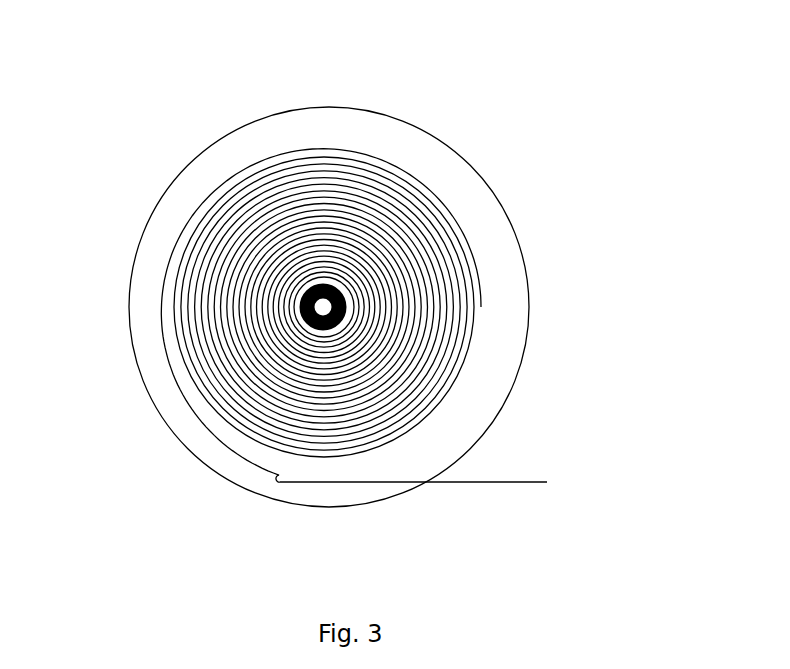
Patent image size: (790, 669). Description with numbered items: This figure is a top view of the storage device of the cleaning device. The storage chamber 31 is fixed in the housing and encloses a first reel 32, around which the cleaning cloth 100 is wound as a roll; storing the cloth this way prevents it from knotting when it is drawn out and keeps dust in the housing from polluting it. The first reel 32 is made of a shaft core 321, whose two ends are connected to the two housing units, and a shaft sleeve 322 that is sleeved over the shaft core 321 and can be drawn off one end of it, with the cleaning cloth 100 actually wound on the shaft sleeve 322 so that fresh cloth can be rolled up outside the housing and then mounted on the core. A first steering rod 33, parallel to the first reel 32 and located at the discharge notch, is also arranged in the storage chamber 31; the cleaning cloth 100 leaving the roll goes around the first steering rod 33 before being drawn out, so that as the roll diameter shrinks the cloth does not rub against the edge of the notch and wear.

The storage chamber 31 is at (453, 153).
The first reel 32 is at (398, 55).
The shaft core 321 is at (340, 288).
The shaft sleeve 322 is at (324, 288).
The first steering rod 33 is at (276, 476).
The cleaning cloth 100 is at (483, 484).